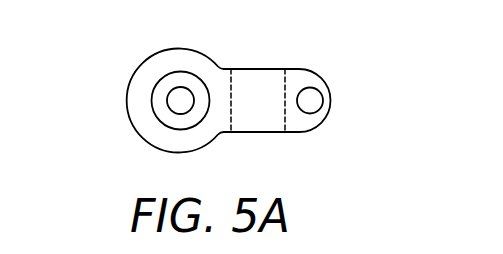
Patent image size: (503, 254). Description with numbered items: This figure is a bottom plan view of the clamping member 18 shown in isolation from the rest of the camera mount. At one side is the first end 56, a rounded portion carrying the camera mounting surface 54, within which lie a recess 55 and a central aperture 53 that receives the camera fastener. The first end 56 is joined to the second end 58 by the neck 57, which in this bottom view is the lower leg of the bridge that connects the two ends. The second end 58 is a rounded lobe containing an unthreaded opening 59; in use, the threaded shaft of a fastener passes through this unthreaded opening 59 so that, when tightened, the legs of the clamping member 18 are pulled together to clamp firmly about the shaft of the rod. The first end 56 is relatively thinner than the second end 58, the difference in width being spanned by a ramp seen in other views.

The clamping member 18 is at (219, 94).
The aperture 53 is at (179, 97).
The camera mounting surface 54 is at (150, 128).
The recess 55 is at (198, 93).
The first end 56 is at (129, 107).
The neck 57 is at (244, 133).
The second end 58 is at (333, 128).
The unthreaded opening 59 is at (311, 100).